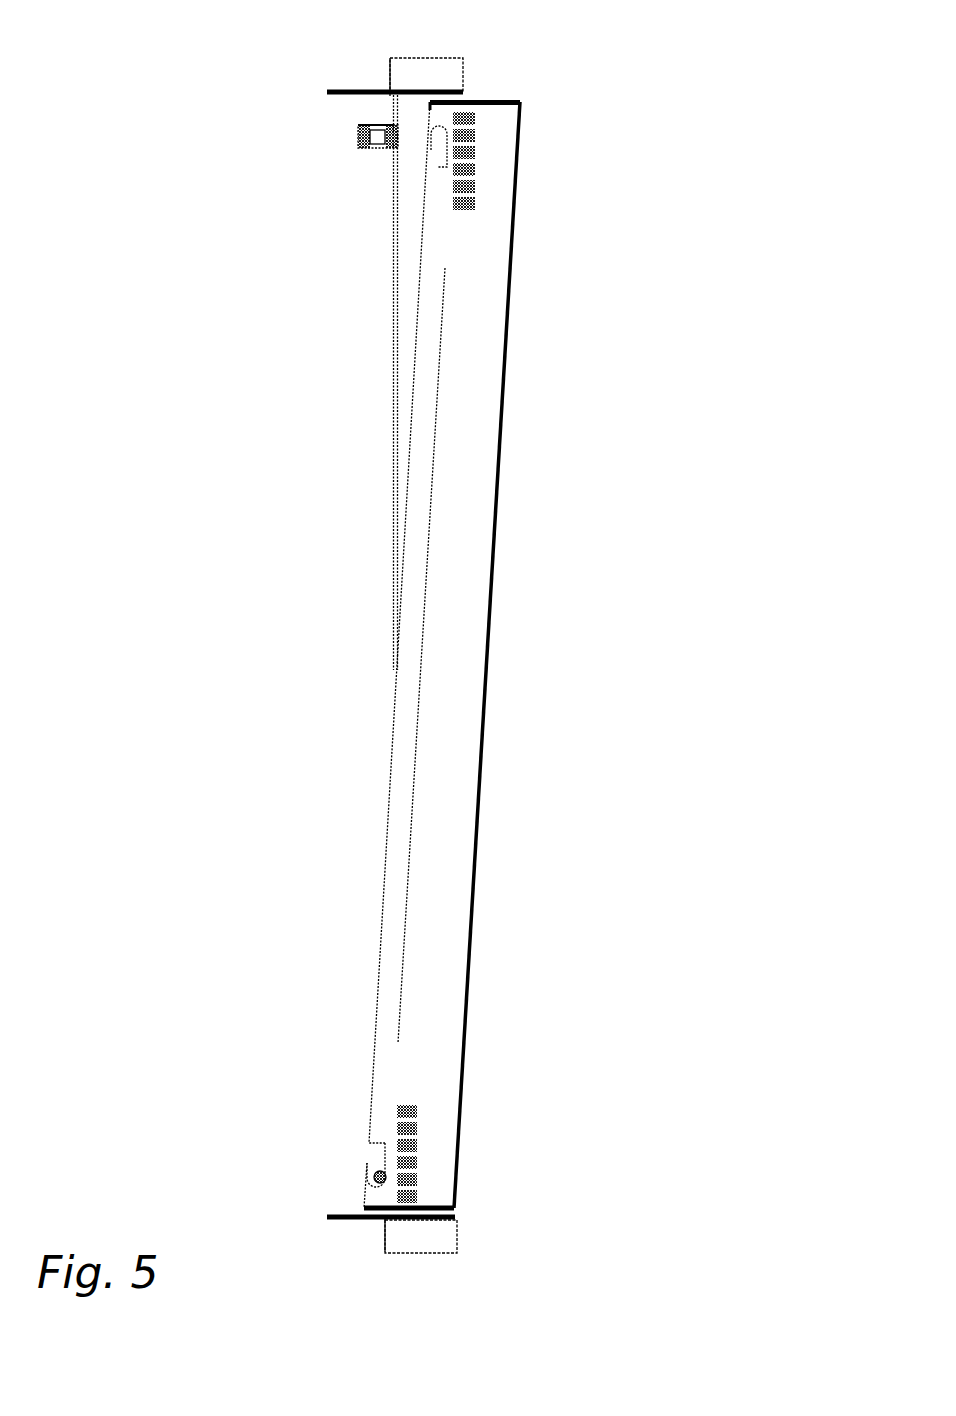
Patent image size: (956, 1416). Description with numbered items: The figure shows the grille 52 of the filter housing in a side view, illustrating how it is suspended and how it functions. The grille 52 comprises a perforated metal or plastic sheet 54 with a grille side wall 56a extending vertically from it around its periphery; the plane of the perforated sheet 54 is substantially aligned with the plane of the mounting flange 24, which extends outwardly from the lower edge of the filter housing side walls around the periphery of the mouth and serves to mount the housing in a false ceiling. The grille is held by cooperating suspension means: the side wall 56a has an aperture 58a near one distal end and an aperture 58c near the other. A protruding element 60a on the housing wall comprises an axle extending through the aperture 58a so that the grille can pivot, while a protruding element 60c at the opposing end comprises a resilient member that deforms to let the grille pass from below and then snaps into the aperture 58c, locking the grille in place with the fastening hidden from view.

The mounting flange 24 is at (463, 80).
The grille 52 is at (513, 220).
The perforated sheet 54 is at (468, 548).
The grille side wall 56a is at (405, 773).
The aperture 58a is at (382, 1153).
The aperture 58c is at (442, 147).
The protruding element 60a is at (378, 1178).
The protruding element 60c is at (377, 148).